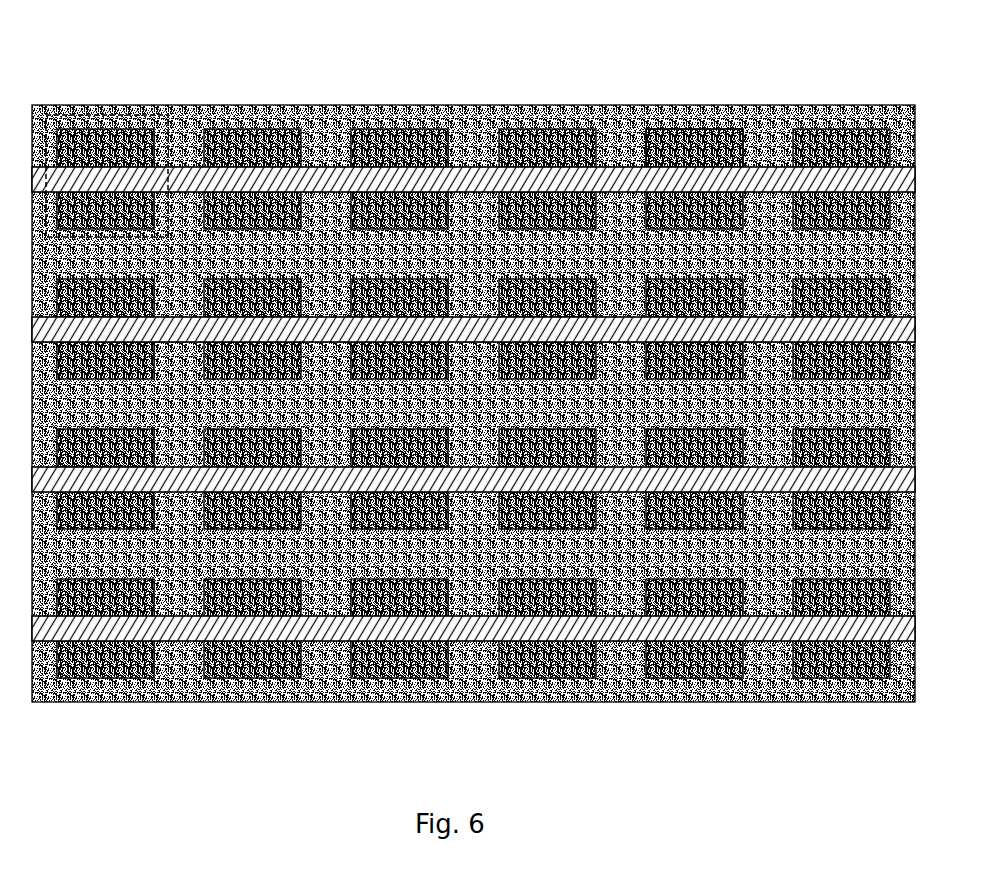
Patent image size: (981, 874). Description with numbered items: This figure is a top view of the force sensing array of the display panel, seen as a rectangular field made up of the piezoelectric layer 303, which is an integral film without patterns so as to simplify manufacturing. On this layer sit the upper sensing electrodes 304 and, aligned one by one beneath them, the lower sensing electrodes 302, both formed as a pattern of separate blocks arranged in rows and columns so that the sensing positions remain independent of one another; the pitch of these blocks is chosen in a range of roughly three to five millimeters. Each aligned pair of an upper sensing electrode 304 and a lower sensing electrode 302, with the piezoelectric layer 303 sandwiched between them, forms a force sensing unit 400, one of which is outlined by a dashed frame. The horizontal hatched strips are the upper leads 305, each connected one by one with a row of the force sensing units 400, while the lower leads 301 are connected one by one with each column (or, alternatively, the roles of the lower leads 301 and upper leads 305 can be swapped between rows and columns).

The force sensing unit 400 is at (146, 114).
The piezoelectric layer 303 is at (322, 118).
The lower leads 301 is at (394, 118).
The upper leads 305 is at (463, 177).
The upper sensing electrodes 304 is at (663, 102).
The lower sensing electrodes 302 is at (694, 148).